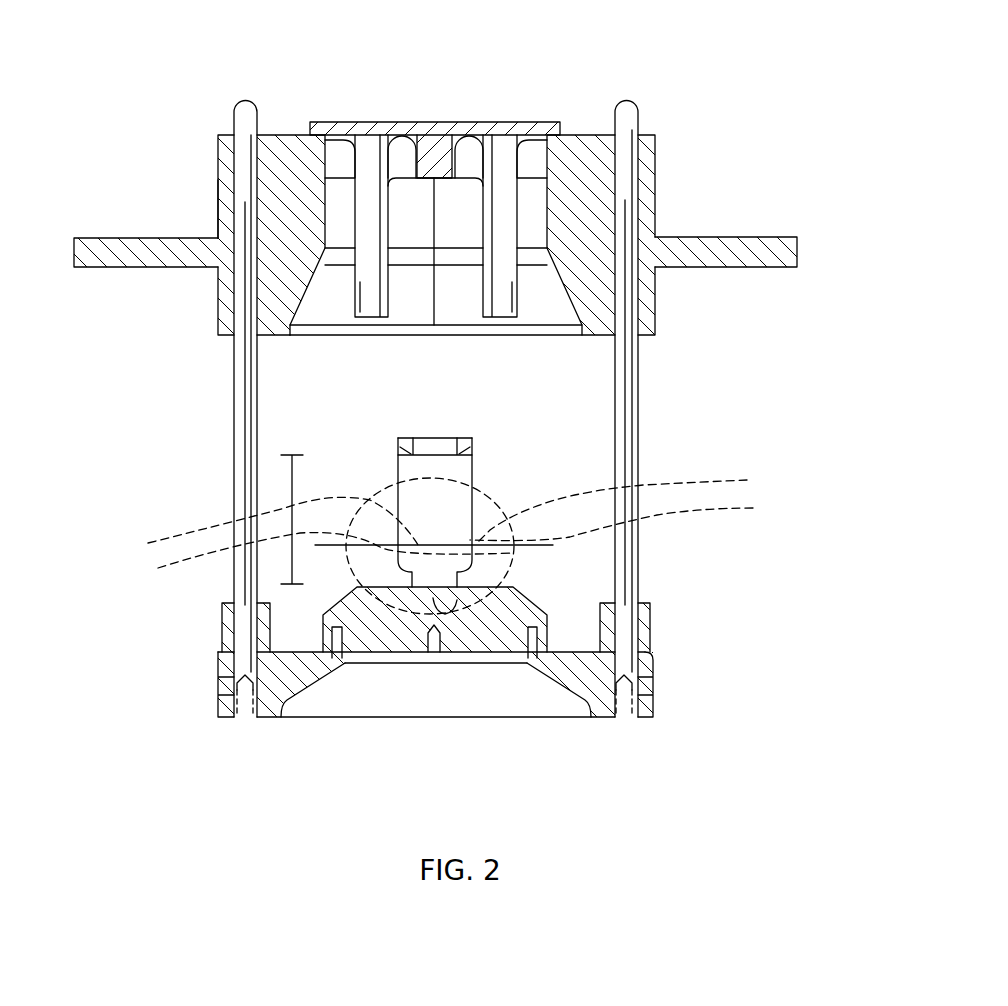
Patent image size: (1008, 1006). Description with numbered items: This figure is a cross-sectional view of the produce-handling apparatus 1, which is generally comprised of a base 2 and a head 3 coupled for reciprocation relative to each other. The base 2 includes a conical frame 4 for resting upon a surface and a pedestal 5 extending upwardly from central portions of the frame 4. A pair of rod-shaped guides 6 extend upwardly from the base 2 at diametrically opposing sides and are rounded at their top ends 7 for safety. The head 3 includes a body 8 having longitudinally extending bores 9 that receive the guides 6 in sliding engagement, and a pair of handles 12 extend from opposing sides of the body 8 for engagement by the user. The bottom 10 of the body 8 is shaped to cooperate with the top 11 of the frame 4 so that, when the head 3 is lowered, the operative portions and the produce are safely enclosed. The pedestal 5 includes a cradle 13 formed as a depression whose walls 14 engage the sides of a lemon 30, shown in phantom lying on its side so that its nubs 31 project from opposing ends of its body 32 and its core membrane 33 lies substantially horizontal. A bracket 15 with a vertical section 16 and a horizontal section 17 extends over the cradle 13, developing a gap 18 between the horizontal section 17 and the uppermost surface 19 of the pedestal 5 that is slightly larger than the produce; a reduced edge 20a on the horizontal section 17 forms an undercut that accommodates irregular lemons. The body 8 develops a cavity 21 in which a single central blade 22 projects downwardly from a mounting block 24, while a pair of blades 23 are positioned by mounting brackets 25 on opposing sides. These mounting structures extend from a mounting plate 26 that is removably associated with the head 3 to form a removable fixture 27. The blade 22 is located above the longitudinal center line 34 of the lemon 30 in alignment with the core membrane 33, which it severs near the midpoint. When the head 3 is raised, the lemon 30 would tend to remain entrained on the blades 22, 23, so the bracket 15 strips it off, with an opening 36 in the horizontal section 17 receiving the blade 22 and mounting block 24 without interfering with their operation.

The apparatus 1 is at (765, 428).
The base 2 is at (530, 682).
The head 3 is at (703, 163).
The frame 4 is at (588, 700).
The pedestal 5 is at (365, 640).
The guides 6 is at (638, 358).
The top ends 7 is at (240, 100).
The body 8 is at (222, 205).
The bores 9 is at (655, 147).
The bottom 10 is at (312, 355).
The top 11 is at (573, 650).
The handles 12 is at (112, 238).
The cradle 13 is at (522, 583).
The walls 14 is at (440, 603).
The bracket 15 is at (434, 478).
The vertical section 16 is at (430, 468).
The horizontal section 17 is at (400, 437).
The gap 18 is at (290, 580).
The uppermost surface 19 is at (350, 578).
The reduced edge 20a is at (398, 450).
The cavity 21 is at (548, 314).
The blade 22 is at (433, 217).
The blades 23 is at (355, 290).
The mounting block 24 is at (460, 160).
The mounting brackets 25 is at (345, 158).
The mounting plate 26 is at (395, 118).
The removable fixture 27 is at (454, 168).
The lemon 30 is at (487, 492).
The nubs 31 is at (458, 537).
The body 32 is at (266, 525).
The core membrane 33 is at (630, 503).
The longitudinal center line 34 is at (553, 545).
The opening 36 is at (445, 432).